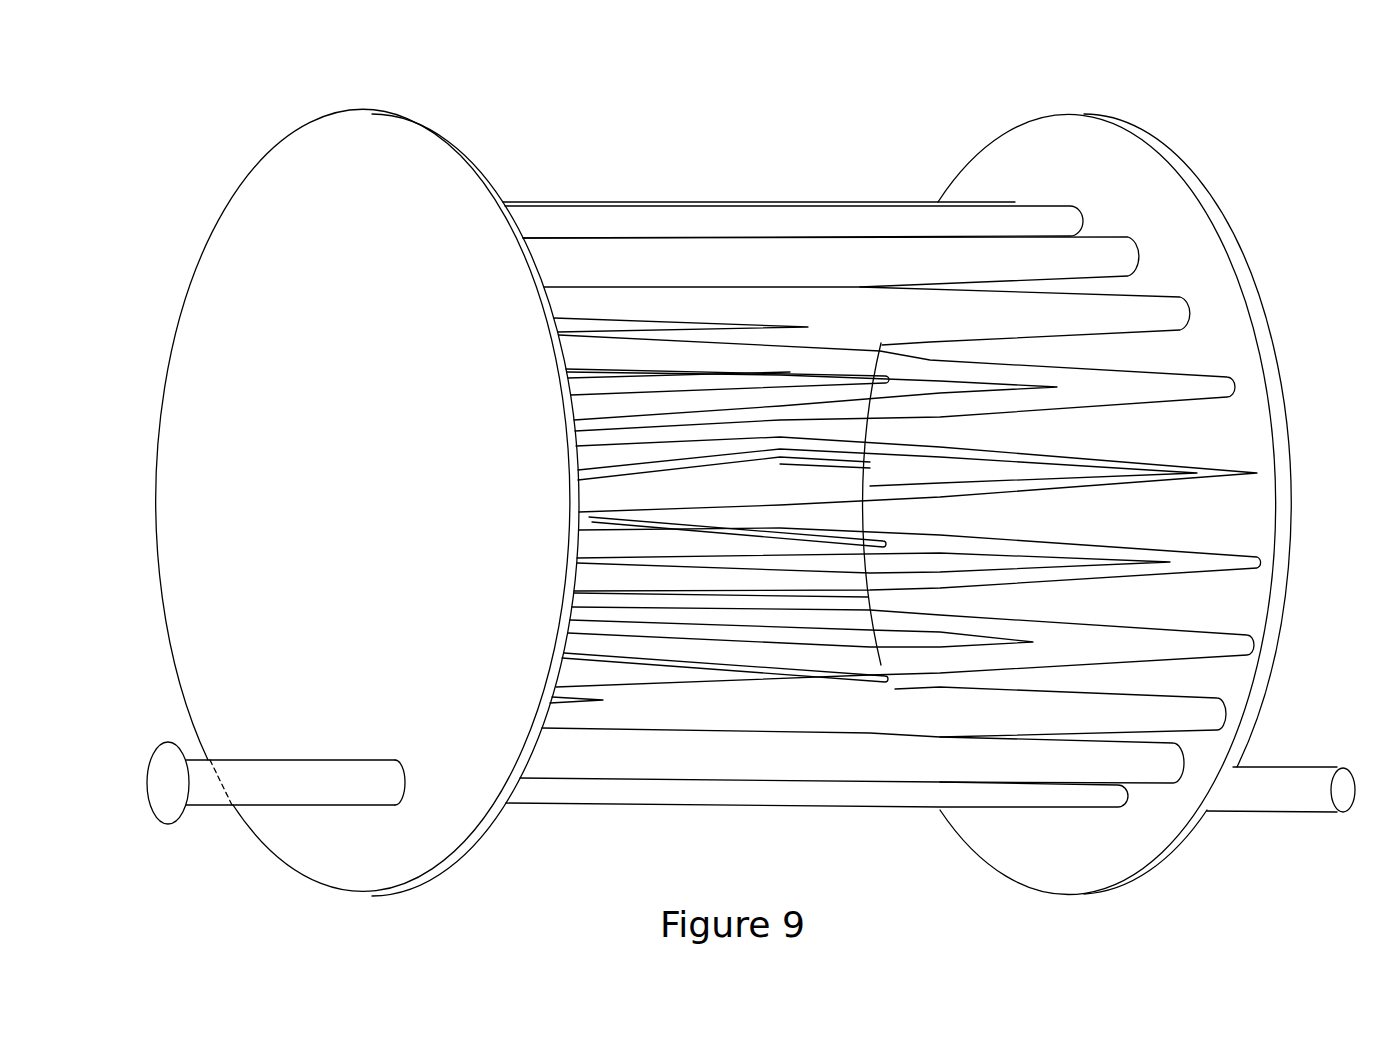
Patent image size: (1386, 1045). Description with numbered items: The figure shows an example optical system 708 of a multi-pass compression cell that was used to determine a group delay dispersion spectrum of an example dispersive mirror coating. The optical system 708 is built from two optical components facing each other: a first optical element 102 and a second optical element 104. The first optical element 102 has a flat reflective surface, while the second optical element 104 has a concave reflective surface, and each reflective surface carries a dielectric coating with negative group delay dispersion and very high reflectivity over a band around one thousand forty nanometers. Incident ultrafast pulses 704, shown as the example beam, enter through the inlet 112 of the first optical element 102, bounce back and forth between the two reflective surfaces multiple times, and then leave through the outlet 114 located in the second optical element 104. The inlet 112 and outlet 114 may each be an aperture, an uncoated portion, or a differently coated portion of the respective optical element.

The optical system 708 is at (285, 56).
The first optical element 102 is at (410, 473).
The second optical element 104 is at (1088, 195).
The incident ultrafast pulses 704 is at (243, 777).
The inlet 112 is at (405, 797).
The outlet 114 is at (1230, 780).